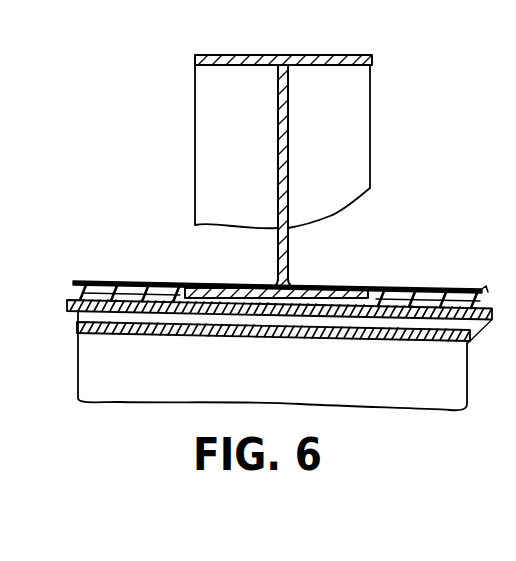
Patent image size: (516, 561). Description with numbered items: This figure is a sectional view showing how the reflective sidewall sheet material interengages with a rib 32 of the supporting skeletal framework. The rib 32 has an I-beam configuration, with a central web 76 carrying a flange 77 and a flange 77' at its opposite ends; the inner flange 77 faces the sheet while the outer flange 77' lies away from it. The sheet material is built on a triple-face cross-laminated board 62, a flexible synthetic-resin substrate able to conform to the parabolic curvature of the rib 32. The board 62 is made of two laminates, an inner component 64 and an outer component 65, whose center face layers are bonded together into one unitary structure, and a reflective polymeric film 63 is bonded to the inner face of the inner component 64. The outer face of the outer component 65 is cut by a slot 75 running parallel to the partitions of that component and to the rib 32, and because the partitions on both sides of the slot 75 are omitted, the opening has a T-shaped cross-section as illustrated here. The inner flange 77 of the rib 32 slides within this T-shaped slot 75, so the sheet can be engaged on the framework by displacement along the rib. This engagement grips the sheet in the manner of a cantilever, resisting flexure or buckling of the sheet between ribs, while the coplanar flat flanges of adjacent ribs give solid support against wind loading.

The rib 32 is at (202, 142).
The triple-face cross-laminated board 62 is at (93, 280).
The reflective polymeric film 63 is at (142, 337).
The inner component 64 is at (70, 312).
The outer component 65 is at (160, 285).
The slot 75 is at (279, 283).
The central web 76 is at (288, 145).
The inner flange 77 is at (276, 331).
The outer flange 77' is at (283, 48).